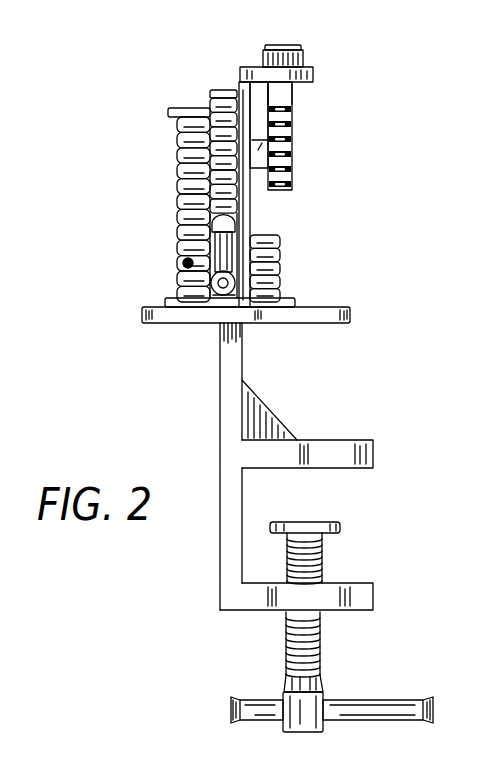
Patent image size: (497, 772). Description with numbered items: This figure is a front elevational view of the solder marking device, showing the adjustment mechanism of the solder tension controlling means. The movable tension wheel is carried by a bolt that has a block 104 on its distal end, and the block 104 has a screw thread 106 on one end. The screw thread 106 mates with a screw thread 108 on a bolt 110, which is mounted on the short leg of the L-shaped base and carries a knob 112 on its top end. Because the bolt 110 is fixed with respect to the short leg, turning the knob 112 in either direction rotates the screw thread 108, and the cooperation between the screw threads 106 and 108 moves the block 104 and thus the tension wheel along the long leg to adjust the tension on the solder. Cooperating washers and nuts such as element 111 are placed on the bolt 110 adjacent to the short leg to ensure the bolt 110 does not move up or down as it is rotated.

The block 104 is at (177, 173).
The screw thread 106 is at (293, 124).
The screw thread 108 is at (293, 150).
The bolt 110 is at (297, 95).
The washer and nut 111 is at (257, 65).
The knob 112 is at (305, 55).